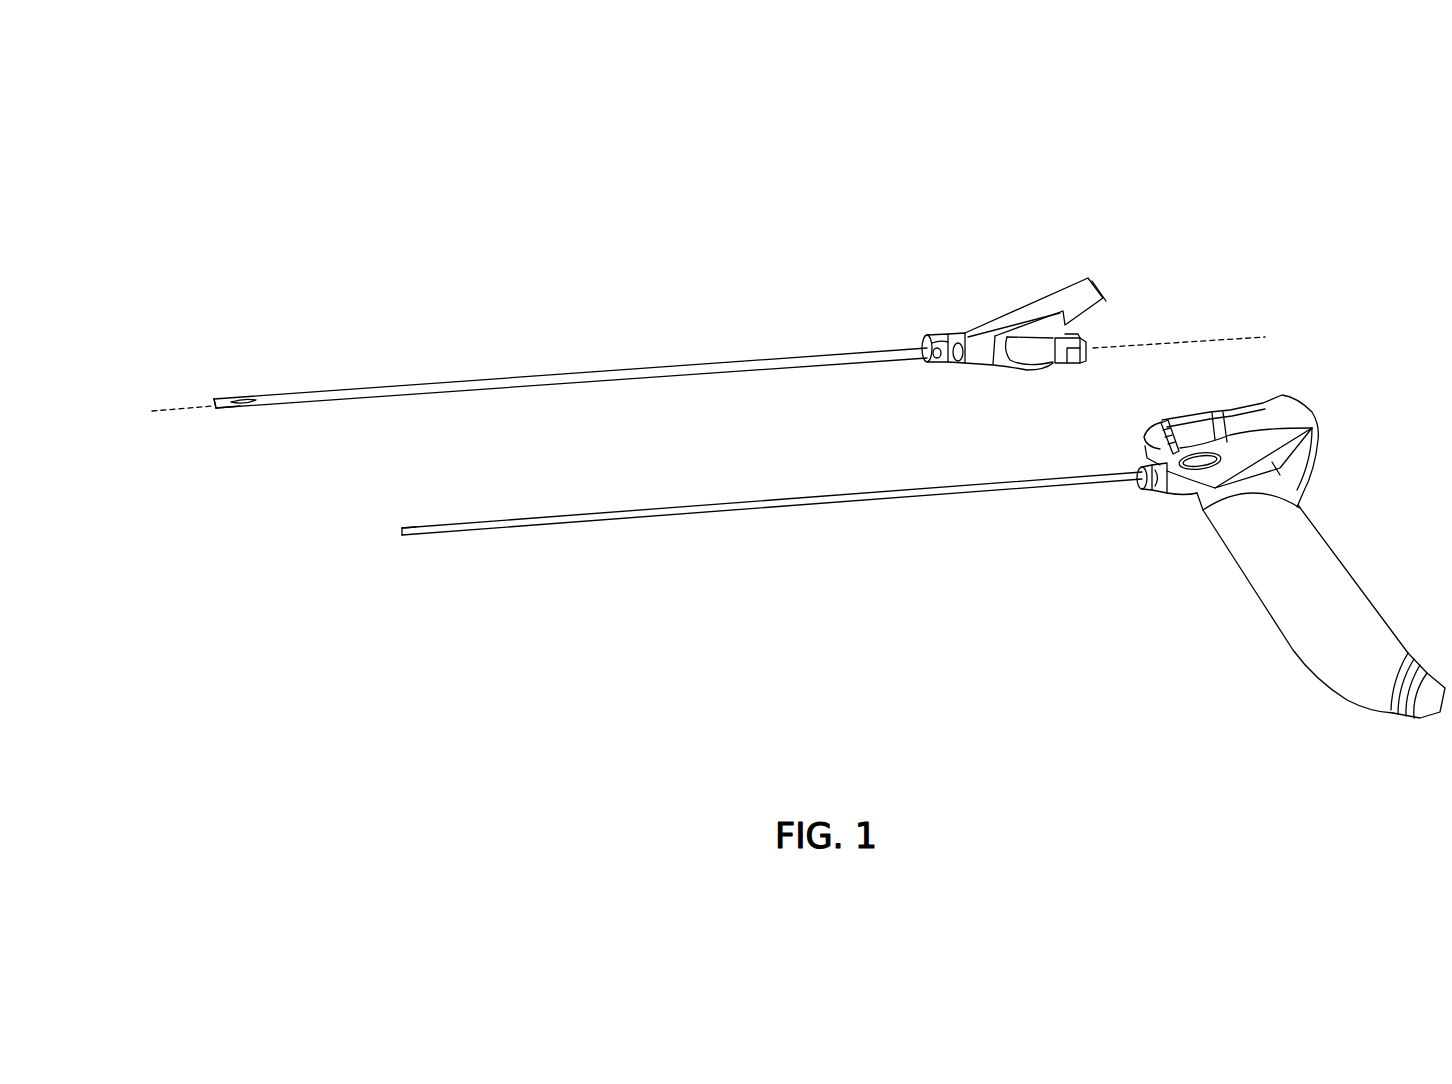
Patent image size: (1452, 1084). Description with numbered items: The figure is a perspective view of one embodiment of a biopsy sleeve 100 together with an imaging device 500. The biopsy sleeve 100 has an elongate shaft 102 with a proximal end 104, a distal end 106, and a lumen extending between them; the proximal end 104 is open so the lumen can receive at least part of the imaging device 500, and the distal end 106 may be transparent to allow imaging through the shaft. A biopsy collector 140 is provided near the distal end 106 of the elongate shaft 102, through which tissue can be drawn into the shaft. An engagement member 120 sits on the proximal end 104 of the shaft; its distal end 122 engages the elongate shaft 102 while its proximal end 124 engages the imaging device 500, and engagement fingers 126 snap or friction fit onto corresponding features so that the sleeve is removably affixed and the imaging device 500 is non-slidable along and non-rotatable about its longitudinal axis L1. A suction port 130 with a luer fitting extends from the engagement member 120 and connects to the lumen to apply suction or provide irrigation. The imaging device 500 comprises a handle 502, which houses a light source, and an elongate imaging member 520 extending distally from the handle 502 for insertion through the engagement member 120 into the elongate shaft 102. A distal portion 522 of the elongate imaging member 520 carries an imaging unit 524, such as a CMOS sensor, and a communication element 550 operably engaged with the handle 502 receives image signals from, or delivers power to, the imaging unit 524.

The biopsy sleeve 100 is at (395, 326).
The elongate shaft 102 is at (620, 367).
The proximal end 104 is at (921, 342).
The distal end 106 is at (215, 410).
The engagement member 120 is at (1047, 243).
The distal end 122 is at (941, 333).
The proximal end 124 is at (1112, 336).
The engagement fingers 126 is at (1082, 337).
The suction port 130 is at (1070, 283).
The biopsy collector 140 is at (242, 392).
The longitudinal axis L1 is at (712, 375).
The imaging device 500 is at (1192, 592).
The handle 502 is at (1295, 652).
The elongate imaging member 520 is at (590, 523).
The distal portion 522 is at (420, 543).
The imaging unit 524 is at (403, 536).
The communication element 550 is at (1313, 410).